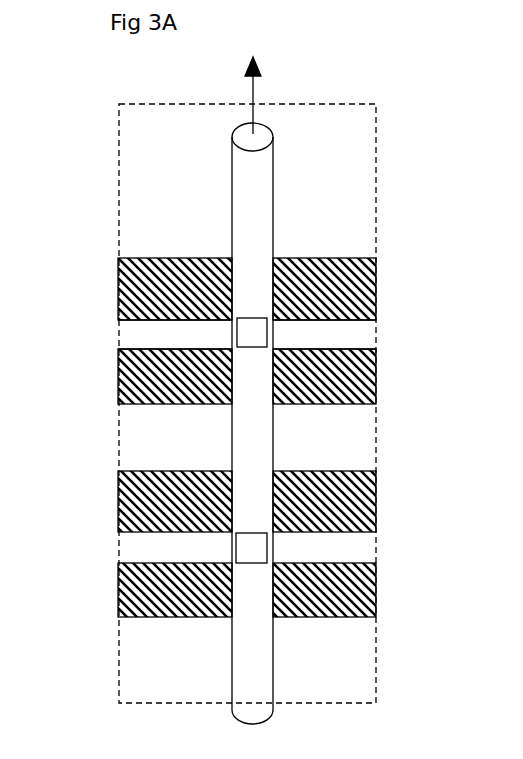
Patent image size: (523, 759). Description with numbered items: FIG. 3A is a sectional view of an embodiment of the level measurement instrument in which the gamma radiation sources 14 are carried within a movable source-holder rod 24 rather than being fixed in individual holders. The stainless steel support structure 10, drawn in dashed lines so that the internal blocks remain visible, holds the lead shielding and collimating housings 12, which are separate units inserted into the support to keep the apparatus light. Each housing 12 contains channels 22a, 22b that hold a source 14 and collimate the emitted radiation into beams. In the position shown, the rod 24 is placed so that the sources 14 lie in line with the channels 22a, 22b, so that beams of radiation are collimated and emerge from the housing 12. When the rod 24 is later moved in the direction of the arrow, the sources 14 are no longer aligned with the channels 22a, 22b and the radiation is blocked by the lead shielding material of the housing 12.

The support structure 10 is at (117, 217).
The shielding and collimating housing 12 is at (117, 275).
The source 14 is at (248, 337).
The channel 22a is at (137, 337).
The channel 22b is at (372, 337).
The source-holder rod 24 is at (240, 190).